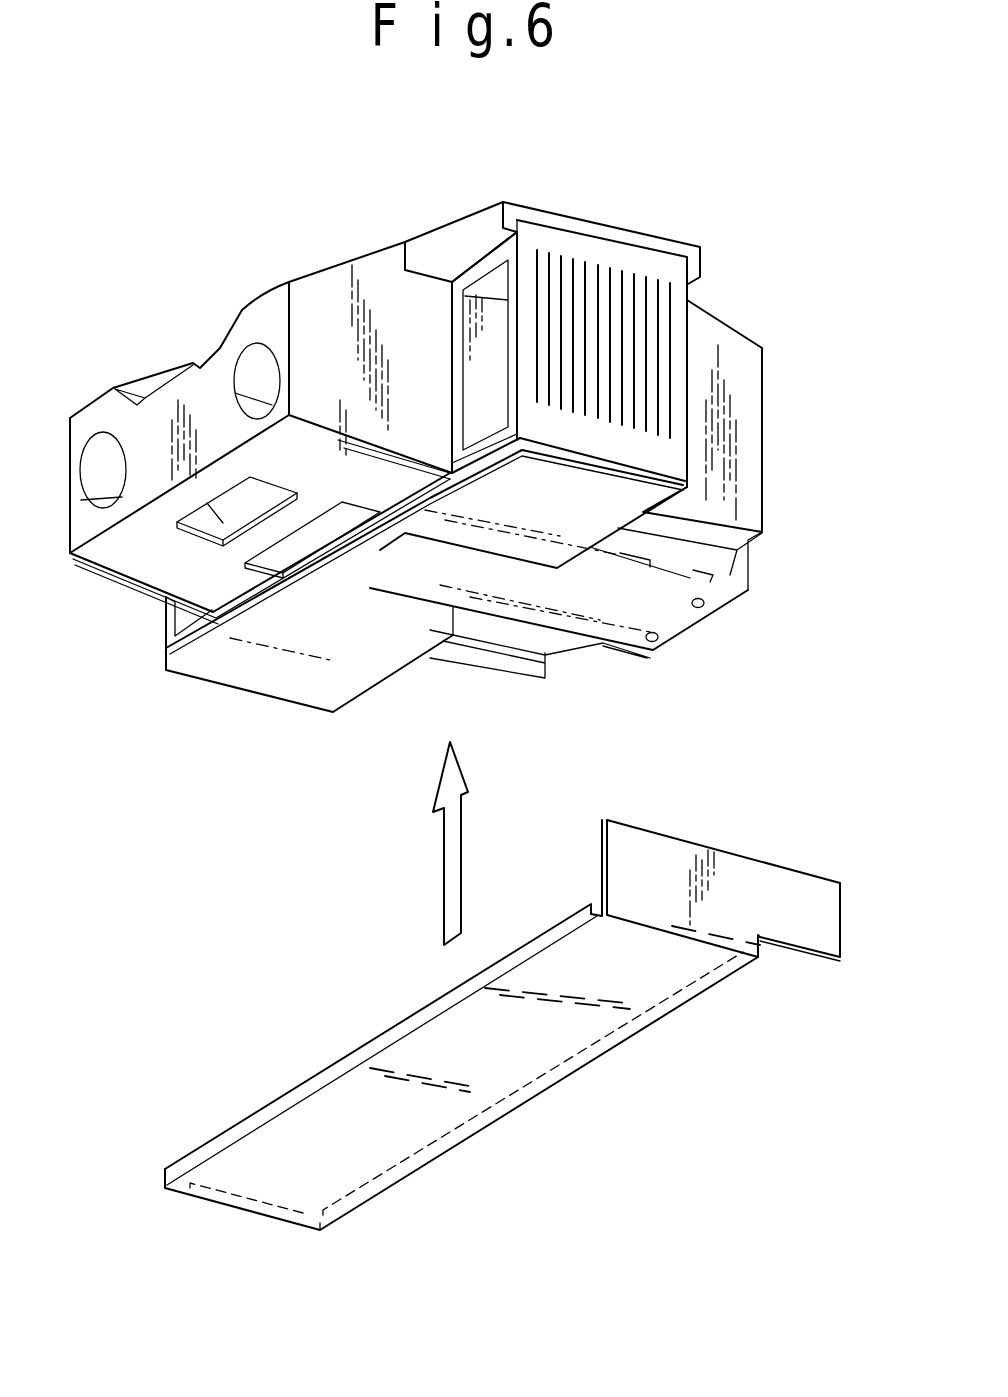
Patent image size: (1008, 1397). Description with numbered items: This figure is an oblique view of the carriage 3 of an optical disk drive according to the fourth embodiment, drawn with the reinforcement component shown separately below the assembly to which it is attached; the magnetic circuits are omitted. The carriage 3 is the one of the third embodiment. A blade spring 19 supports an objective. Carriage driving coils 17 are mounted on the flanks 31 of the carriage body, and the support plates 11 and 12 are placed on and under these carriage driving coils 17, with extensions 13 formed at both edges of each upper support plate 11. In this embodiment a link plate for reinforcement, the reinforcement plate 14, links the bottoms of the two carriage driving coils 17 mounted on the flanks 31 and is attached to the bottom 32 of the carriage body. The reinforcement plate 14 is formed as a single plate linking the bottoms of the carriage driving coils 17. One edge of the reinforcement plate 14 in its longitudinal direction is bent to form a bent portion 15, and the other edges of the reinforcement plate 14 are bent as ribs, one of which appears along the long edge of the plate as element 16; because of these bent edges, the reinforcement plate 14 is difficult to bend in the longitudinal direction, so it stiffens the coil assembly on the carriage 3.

The carriage 3 is at (241, 216).
The support plate 11 is at (581, 215).
The support plate 12 is at (273, 675).
The extension 13 is at (458, 232).
The reinforcement plate 14 is at (257, 1172).
The bent portion 15 is at (758, 897).
The guide rail 16 is at (320, 1088).
The carriage driving coil 17 is at (650, 277).
The blade spring 19 is at (668, 615).
The flank 31 is at (745, 400).
The bottom 32 is at (533, 537).